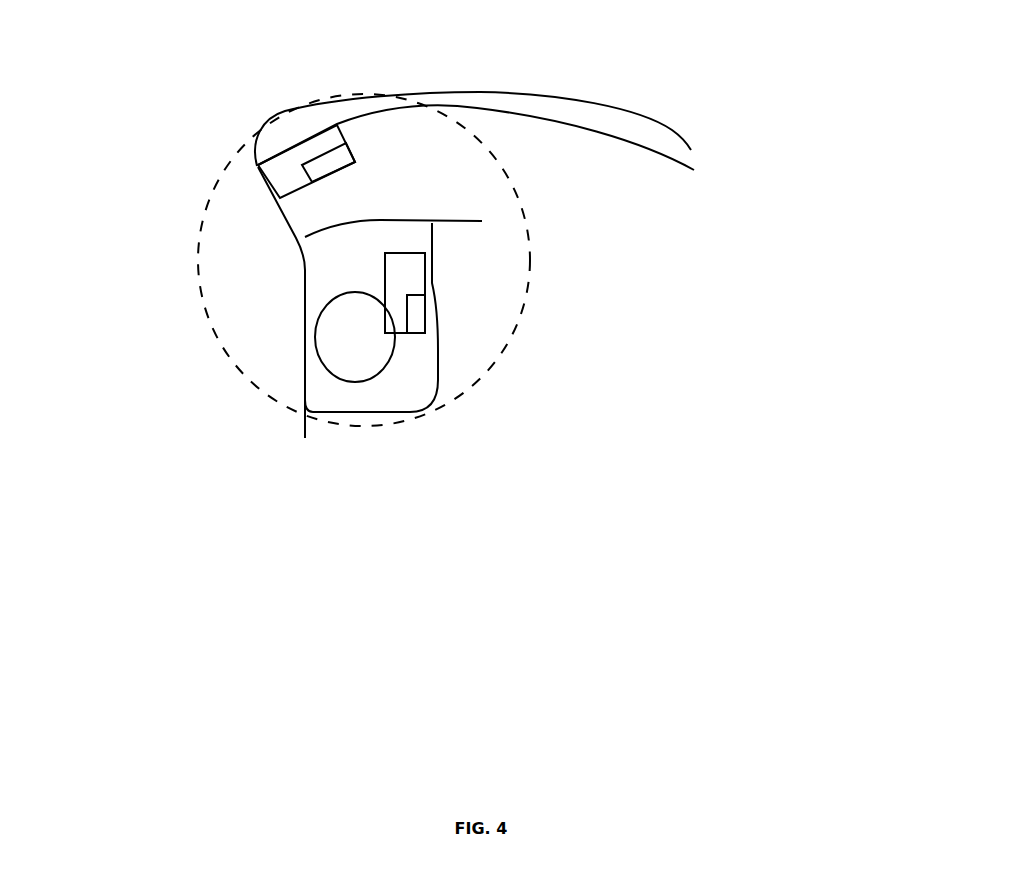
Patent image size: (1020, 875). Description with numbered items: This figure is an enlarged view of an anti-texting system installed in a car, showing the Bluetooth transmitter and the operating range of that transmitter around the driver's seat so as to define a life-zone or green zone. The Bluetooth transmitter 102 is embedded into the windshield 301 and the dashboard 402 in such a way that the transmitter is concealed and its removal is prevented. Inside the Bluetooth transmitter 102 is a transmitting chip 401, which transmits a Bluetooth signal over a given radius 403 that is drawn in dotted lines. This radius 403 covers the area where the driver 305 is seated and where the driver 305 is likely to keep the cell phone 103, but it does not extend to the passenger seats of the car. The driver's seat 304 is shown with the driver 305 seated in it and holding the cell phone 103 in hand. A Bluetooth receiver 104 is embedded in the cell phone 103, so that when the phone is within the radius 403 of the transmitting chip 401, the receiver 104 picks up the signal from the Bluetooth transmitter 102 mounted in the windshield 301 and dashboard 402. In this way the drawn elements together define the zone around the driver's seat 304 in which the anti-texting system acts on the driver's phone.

The Bluetooth transmitter 102 is at (278, 173).
The cell phone 103 is at (408, 275).
The Bluetooth receiver 104 is at (418, 320).
The windshield 301 is at (618, 102).
The driver's seat 304 is at (315, 400).
The driver 305 is at (357, 363).
The transmitting chip 401 is at (327, 160).
The dashboard 402 is at (523, 102).
The radius 403 is at (502, 352).